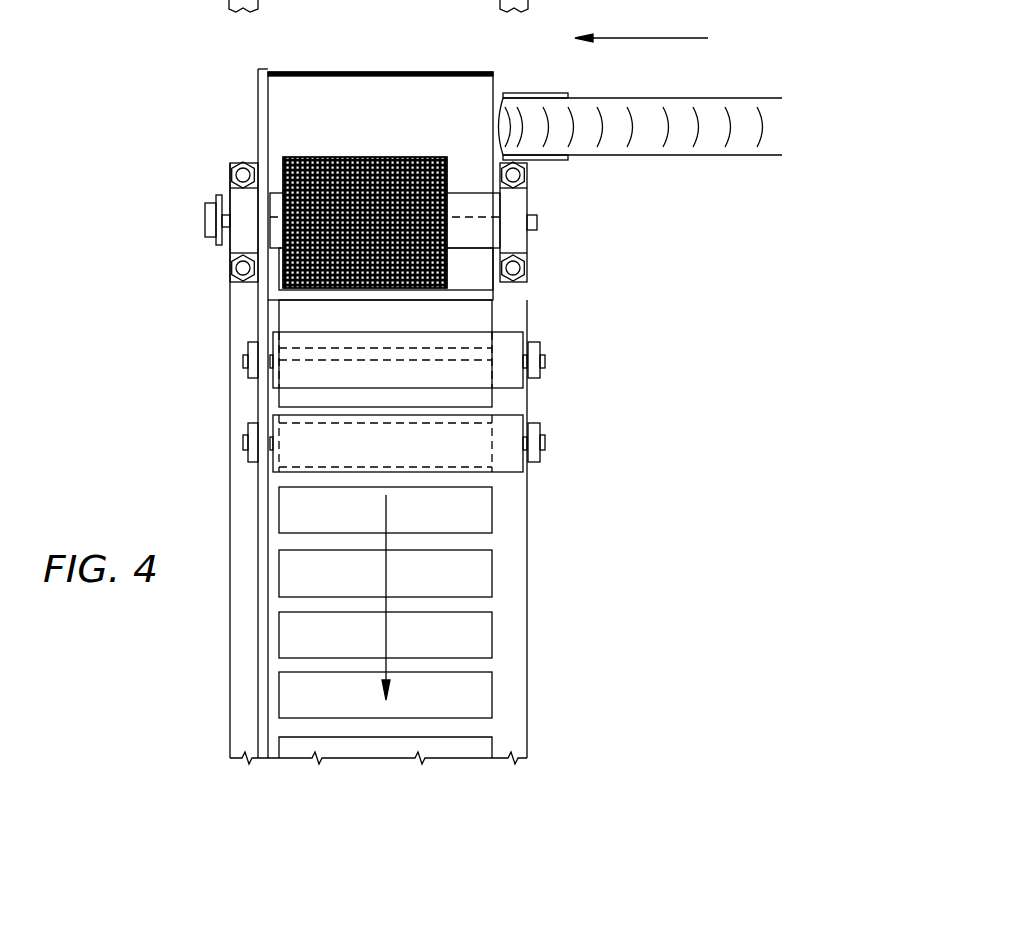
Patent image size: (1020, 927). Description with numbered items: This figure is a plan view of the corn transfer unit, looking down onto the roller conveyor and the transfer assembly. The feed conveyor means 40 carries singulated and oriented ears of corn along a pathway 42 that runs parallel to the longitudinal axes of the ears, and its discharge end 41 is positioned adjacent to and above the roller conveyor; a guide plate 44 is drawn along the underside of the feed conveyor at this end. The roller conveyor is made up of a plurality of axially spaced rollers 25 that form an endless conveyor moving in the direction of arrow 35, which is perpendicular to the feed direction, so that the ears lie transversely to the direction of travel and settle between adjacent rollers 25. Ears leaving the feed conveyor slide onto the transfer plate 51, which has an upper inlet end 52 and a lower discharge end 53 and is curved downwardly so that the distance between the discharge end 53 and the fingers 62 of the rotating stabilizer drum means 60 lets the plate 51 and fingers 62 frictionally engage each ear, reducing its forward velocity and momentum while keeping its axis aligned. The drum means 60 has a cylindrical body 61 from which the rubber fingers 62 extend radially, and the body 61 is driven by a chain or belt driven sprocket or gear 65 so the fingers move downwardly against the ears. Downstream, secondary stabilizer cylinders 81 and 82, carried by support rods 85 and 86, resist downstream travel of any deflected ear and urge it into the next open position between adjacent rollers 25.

The rollers 25 is at (492, 393).
The direction of travel arrow 35 is at (388, 570).
The feed conveyor means 40 is at (678, 97).
The discharge end 41 is at (502, 93).
The pathway 42 is at (677, 36).
The lower guide plate 44 is at (568, 157).
The transfer plate 51 is at (382, 116).
The upper inlet end 52 is at (340, 73).
The lower discharge end 53 is at (477, 193).
The rotating stabilizer drum means 60 is at (303, 157).
The cylindrical body 61 is at (470, 248).
The fingers 62 is at (397, 155).
The sprocket or gear 65 is at (210, 212).
The secondary stabilizer cylinder 81 is at (512, 342).
The secondary stabilizer cylinder 82 is at (272, 417).
The support rod 85 is at (545, 360).
The support rod 86 is at (242, 445).